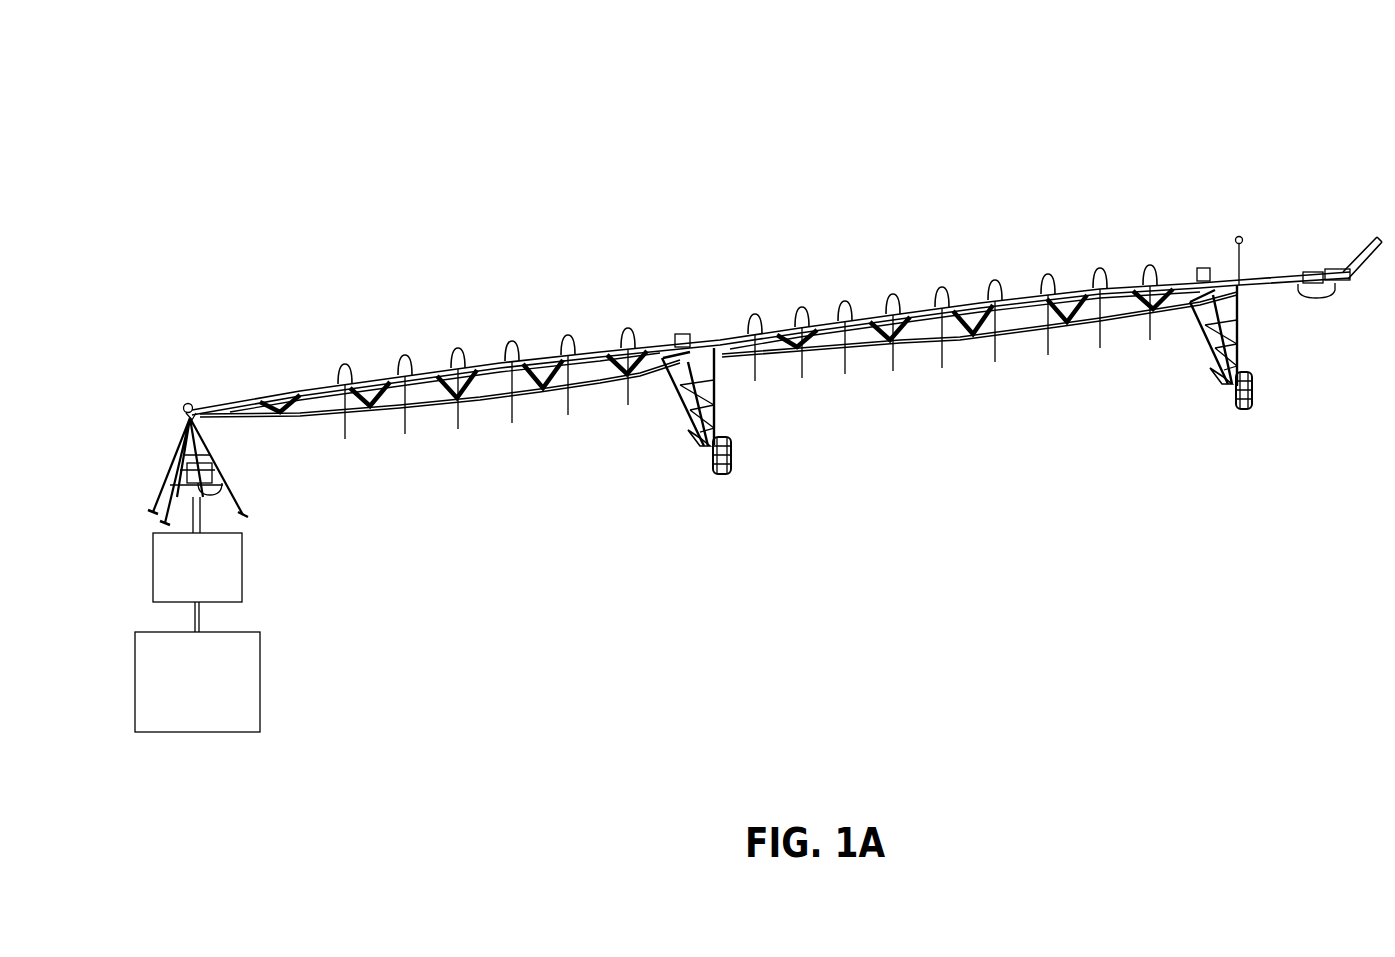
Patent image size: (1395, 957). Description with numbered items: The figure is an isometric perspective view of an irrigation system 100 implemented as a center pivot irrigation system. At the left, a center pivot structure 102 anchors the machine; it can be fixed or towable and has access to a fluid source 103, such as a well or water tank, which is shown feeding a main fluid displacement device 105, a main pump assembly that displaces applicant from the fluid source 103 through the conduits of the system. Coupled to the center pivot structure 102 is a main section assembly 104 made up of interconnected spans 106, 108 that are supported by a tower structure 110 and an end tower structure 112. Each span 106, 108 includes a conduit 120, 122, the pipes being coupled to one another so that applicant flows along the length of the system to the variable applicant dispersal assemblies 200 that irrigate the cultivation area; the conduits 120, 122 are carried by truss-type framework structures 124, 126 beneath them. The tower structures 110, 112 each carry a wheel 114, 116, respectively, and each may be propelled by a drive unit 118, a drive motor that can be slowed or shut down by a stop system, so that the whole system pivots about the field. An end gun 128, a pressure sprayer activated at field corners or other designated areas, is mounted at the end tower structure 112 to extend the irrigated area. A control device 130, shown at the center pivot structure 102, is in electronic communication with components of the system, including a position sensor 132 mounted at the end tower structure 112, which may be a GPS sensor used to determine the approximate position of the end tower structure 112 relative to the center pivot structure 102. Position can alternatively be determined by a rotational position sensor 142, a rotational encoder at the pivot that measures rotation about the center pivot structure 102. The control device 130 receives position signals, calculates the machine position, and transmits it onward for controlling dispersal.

The irrigation system 100 is at (363, 115).
The center pivot structure 102 is at (172, 456).
The fluid source 103 is at (197, 682).
The main section assembly 104 is at (940, 268).
The main fluid displacement device 105 is at (197, 582).
The span 106 is at (478, 328).
The span 108 is at (907, 292).
The tower structure 110 is at (672, 392).
The end tower structure 112 is at (1205, 325).
The wheel 114 is at (733, 448).
The wheel 116 is at (1252, 385).
The drive unit 118 is at (690, 435).
The conduit 120 is at (436, 372).
The conduit 122 is at (975, 300).
The truss-type framework structure 124 is at (490, 405).
The truss-type framework structure 126 is at (975, 350).
The end gun 128 is at (1355, 245).
The control device 130 is at (205, 476).
The position sensor 132 is at (1234, 254).
The rotational position sensor 142 is at (186, 403).
The variable applicant dispersal assembly 200 is at (627, 335).